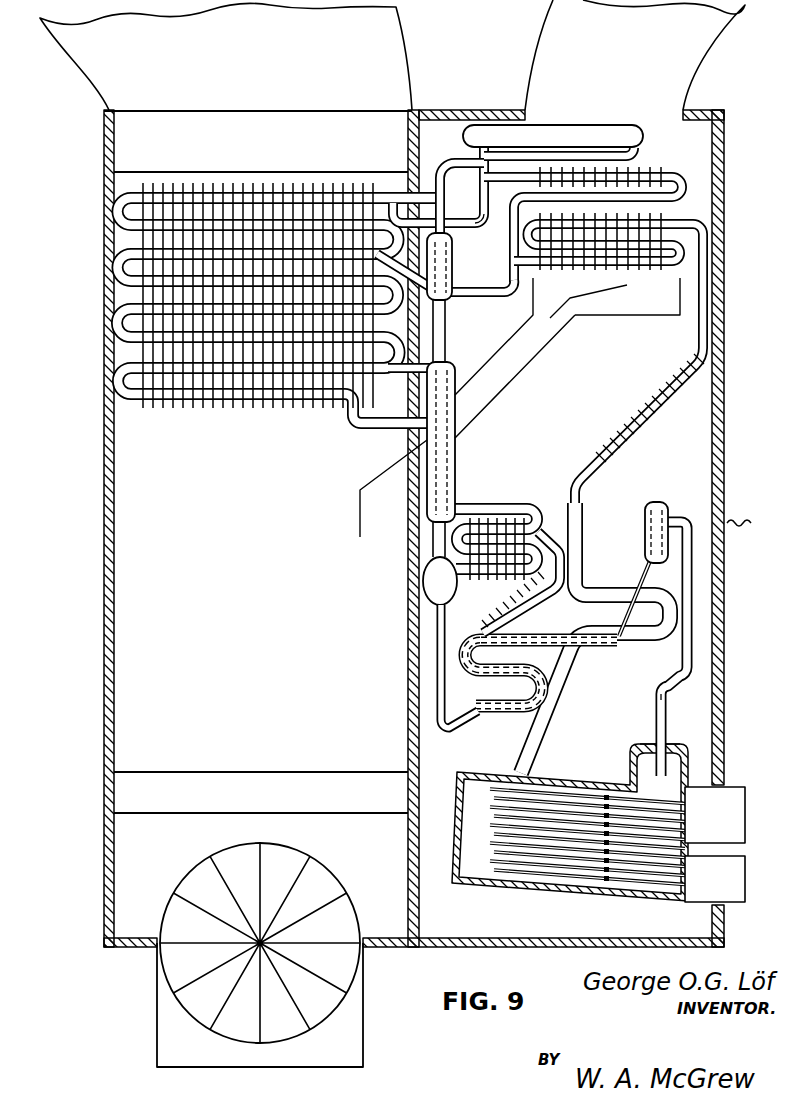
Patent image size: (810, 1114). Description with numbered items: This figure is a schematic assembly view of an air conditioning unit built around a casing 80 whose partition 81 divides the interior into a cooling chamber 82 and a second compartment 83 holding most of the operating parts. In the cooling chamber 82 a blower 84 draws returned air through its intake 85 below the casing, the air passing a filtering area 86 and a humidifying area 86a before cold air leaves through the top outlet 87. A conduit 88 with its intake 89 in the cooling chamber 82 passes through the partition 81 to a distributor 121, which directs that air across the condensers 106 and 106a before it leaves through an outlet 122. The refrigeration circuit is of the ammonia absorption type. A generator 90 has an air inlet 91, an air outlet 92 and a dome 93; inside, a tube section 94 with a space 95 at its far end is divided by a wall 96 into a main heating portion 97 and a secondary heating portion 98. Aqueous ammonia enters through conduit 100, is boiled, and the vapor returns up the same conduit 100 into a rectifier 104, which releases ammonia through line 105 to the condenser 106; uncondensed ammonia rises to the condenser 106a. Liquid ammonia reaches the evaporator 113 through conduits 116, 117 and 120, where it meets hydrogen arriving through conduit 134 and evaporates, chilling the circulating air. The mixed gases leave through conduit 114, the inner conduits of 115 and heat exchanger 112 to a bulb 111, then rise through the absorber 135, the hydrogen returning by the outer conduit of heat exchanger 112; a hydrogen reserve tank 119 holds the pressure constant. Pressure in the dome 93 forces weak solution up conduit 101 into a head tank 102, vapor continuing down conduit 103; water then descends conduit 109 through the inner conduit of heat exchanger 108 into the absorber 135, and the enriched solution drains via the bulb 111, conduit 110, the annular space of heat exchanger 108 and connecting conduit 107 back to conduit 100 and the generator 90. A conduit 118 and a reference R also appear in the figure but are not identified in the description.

The casing 80 is at (723, 298).
The partition 81 is at (406, 745).
The cooling chamber 82 is at (144, 528).
The second compartment 83 is at (571, 236).
The blower 84 is at (333, 873).
The intake 85 is at (347, 1060).
The filtering area 86 is at (261, 792).
The humidifying area 86a is at (258, 141).
The outlet 87 is at (226, 56).
The conduit 88 is at (496, 401).
The intake 89 is at (357, 531).
The generator unit 90 is at (570, 773).
The air inlet 91 is at (748, 826).
The air outlet 92 is at (748, 877).
The dome 93 is at (666, 752).
The tube section 94 is at (530, 886).
The space 95 is at (575, 824).
The wall 96 is at (605, 872).
The main heating portion 97 is at (577, 803).
The secondary heating portion 98 is at (653, 888).
The conduit 100 is at (557, 733).
The conduit 101 is at (683, 673).
The head tank 102 is at (660, 504).
The conduit 103 is at (662, 588).
The rectifier 104 is at (640, 409).
The line 105 is at (698, 345).
The condenser 106 is at (668, 218).
The condenser 106a is at (640, 168).
The connecting conduit 107 is at (572, 613).
The heat exchanger 108 is at (519, 652).
The conduit 109 is at (632, 583).
The conduit 110 is at (442, 733).
The bulb 111 is at (443, 581).
The heat exchanger 112 is at (455, 460).
The evaporator 113 is at (277, 314).
The conduit 114 is at (438, 185).
The conduit 115 is at (455, 269).
The conduit 116 is at (496, 298).
The conduit 117 is at (403, 293).
The conduit loop 118 is at (447, 157).
The hydrogen reserve tank 119 is at (553, 140).
The conduit 120 is at (495, 232).
The distributor 121 is at (625, 317).
The outlet 122 is at (692, 71).
The conduit 134 is at (398, 380).
The absorber 135 is at (486, 578).
The refrigerant R is at (746, 525).